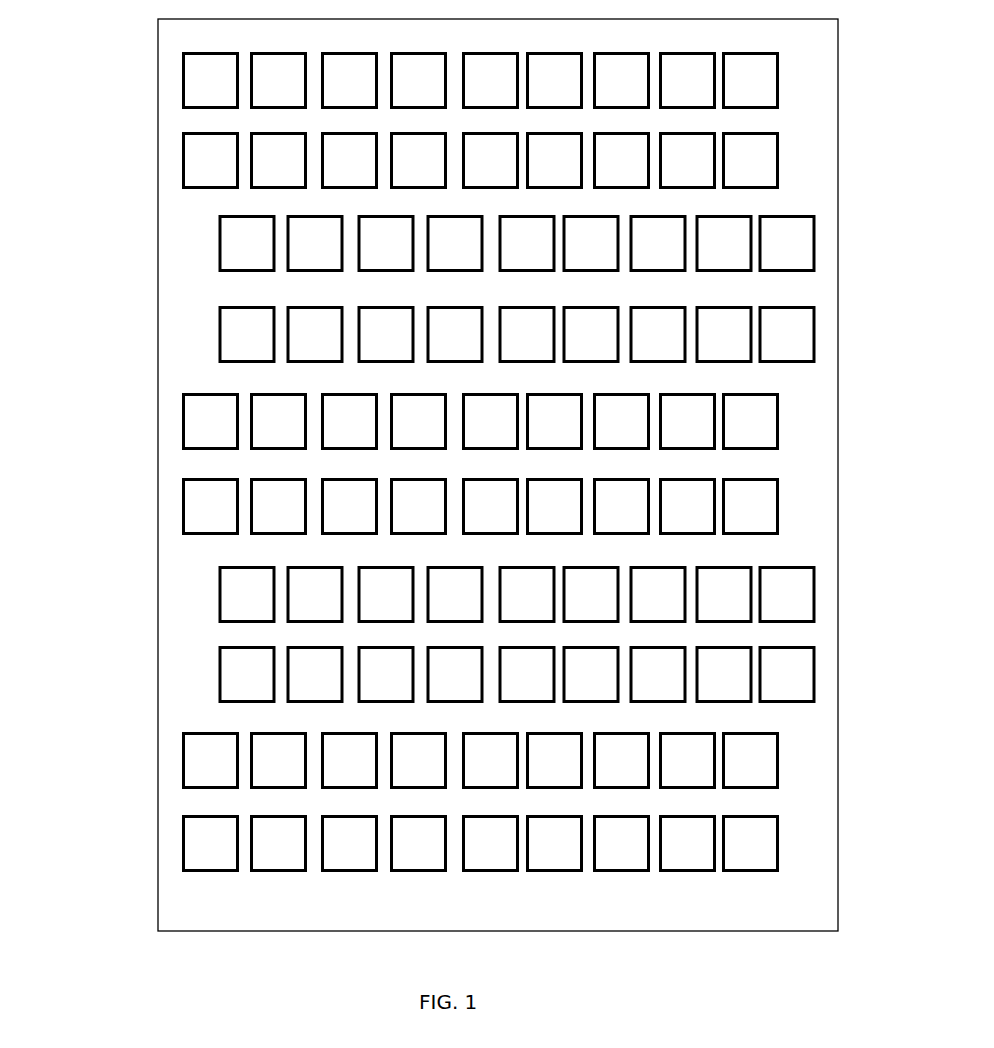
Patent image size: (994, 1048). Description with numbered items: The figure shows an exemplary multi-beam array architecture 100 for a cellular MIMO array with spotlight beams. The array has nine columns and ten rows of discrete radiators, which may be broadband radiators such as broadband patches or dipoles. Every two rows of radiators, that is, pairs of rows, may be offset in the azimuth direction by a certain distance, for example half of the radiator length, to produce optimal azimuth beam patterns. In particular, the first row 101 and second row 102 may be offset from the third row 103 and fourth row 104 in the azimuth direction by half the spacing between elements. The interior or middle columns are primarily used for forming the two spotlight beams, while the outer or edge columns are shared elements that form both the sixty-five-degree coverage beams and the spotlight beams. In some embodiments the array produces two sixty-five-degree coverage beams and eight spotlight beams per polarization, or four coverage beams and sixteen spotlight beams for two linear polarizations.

The multi-beam array architecture 100 is at (124, 108).
The first row 101 is at (778, 61).
The second row 102 is at (778, 150).
The third row 103 is at (815, 249).
The fourth row 104 is at (815, 324).